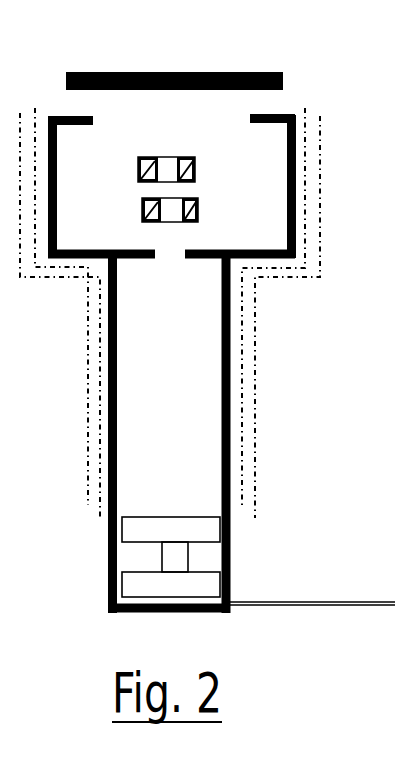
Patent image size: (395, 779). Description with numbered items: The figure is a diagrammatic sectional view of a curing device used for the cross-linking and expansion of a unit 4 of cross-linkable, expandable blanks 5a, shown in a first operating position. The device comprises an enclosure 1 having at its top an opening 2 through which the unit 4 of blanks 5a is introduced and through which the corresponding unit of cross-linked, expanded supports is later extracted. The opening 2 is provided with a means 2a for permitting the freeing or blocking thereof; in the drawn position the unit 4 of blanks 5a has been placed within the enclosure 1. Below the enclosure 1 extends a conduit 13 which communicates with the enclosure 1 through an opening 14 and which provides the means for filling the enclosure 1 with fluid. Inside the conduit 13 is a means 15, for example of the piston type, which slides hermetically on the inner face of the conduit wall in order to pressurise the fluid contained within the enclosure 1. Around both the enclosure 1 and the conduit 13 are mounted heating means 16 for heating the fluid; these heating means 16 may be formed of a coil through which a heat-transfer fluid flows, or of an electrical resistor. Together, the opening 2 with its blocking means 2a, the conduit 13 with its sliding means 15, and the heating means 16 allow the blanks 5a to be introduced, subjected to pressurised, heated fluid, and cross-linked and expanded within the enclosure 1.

The enclosure 1 is at (284, 113).
The opening 2 is at (95, 125).
The means for freeing or blocking the opening 2a is at (153, 70).
The unit of blanks 4 is at (177, 149).
The cross-linkable, expandable blanks 5a is at (201, 210).
The conduit 13 is at (110, 543).
The opening 14 is at (181, 262).
The means which slides hermetically 15 is at (167, 528).
The means for heating the fluid 16 is at (253, 363).